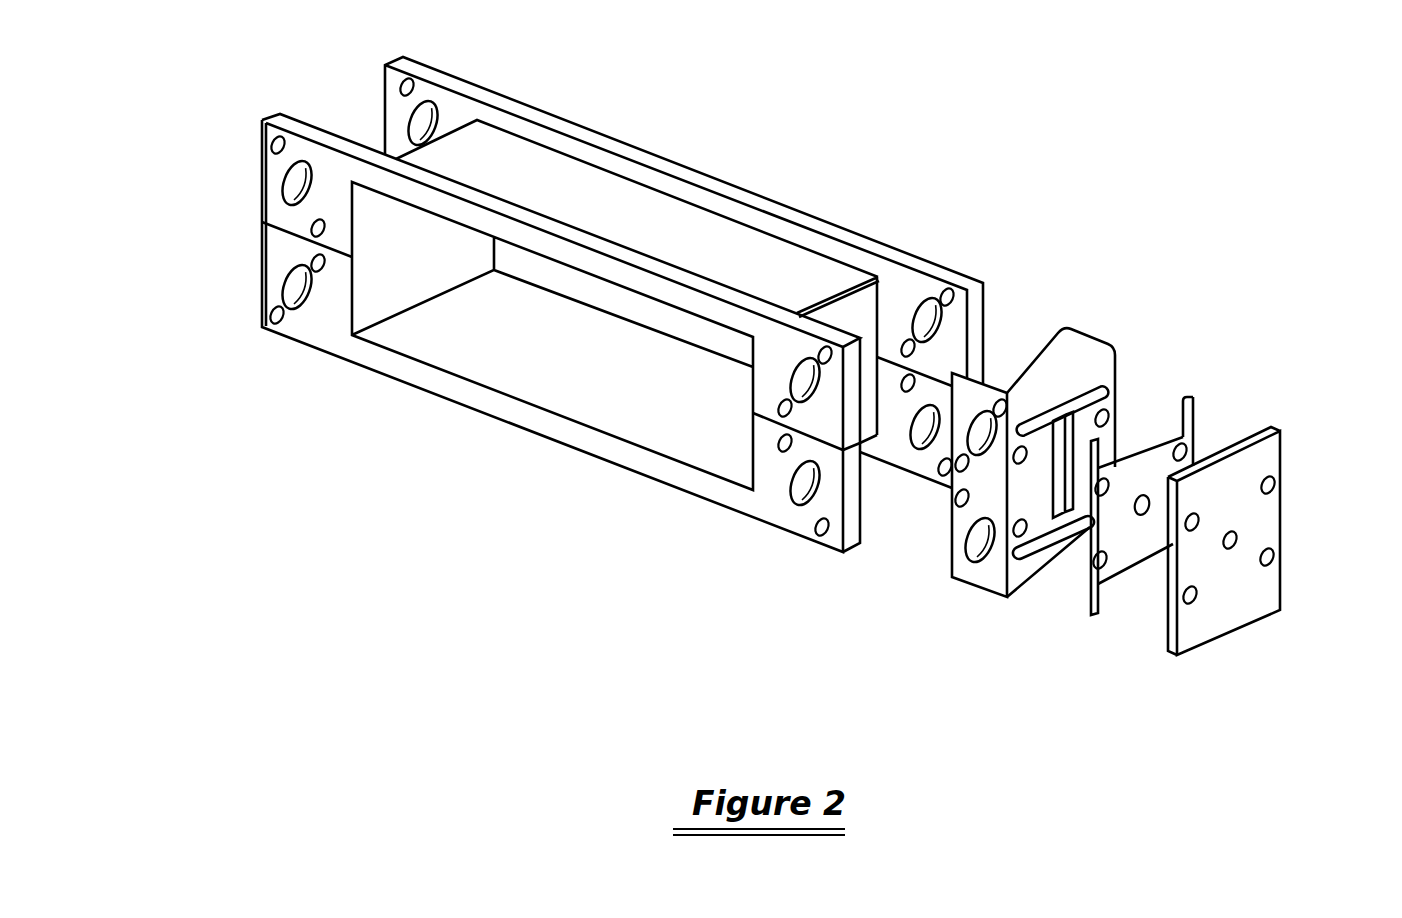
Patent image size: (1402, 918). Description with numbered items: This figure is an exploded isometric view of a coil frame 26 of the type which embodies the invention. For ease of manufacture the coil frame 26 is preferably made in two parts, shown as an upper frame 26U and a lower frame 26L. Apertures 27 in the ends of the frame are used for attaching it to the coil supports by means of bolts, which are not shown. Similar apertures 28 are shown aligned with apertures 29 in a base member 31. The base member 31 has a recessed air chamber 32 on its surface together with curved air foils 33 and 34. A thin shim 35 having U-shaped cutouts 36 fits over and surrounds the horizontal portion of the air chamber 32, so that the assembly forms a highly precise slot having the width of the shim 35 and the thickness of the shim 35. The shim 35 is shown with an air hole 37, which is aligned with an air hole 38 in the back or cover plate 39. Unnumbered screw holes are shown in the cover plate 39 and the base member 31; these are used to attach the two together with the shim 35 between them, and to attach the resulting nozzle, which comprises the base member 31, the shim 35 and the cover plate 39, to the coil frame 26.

The coil frame 26 is at (608, 300).
The upper frame 26U is at (268, 153).
The lower frame 26L is at (268, 283).
The apertures 27 is at (420, 122).
The apertures 28 is at (802, 482).
The apertures 29 is at (975, 543).
The base member 31 is at (1066, 464).
The recessed air chamber 32 is at (1115, 383).
The curved air foil 33 is at (1112, 345).
The curved air foil 34 is at (1002, 598).
The thin shim 35 is at (1199, 540).
The U-shaped cutouts 36 is at (1180, 412).
The air hole 37 is at (1142, 515).
The air hole 38 is at (1238, 537).
The cover plate 39 is at (1277, 541).